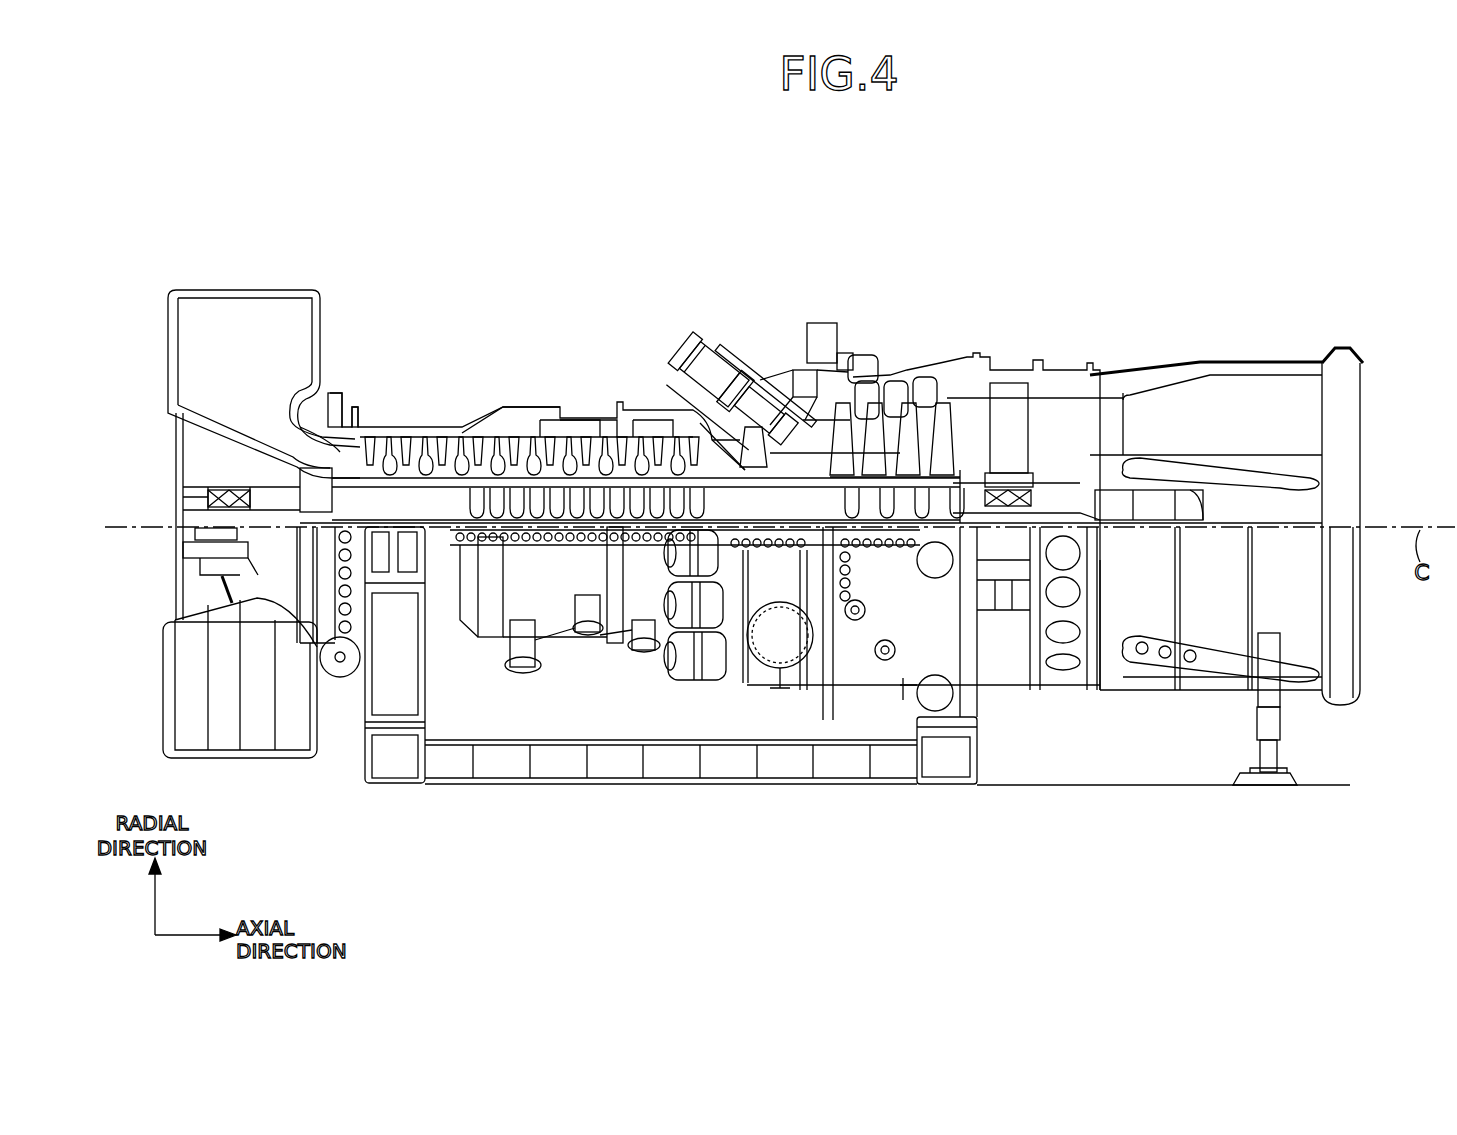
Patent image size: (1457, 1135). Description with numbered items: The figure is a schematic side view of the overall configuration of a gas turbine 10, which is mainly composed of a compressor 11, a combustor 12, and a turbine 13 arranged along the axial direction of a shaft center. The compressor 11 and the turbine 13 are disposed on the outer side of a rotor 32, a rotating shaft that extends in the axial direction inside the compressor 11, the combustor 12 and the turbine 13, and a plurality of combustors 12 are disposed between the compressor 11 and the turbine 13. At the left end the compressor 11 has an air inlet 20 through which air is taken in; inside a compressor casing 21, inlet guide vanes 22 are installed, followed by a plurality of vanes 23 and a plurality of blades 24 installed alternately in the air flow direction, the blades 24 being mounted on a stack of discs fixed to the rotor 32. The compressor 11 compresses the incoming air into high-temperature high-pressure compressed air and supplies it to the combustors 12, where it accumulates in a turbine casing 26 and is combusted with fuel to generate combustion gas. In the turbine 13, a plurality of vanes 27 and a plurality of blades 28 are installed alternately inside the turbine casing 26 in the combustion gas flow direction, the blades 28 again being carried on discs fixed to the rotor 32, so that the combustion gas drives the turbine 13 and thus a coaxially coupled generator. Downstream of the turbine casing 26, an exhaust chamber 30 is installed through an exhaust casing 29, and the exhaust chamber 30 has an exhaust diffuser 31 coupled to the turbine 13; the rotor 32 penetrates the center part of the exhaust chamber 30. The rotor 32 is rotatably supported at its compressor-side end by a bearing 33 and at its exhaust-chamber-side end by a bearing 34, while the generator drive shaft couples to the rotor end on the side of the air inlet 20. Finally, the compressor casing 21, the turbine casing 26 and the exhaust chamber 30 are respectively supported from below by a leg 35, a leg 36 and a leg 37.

The gas turbine 10 is at (779, 213).
The compressor 11 is at (601, 374).
The combustor 12 is at (700, 320).
The turbine 13 is at (976, 375).
The air inlet 20 is at (182, 355).
The compressor casing 21 is at (392, 450).
The inlet guide vanes 22 is at (345, 440).
The vanes 23 is at (425, 455).
The blades 24 is at (352, 443).
The turbine casing 26 is at (907, 372).
The vanes 27 is at (855, 425).
The blades 28 is at (848, 430).
The exhaust casing 29 is at (1010, 360).
The exhaust diffuser 31 is at (1067, 360).
The exhaust chamber 30 is at (1278, 360).
The rotor 32 is at (735, 465).
The bearing 33 is at (183, 503).
The bearing 34 is at (1095, 468).
The leg 35 is at (365, 707).
The leg 36 is at (960, 697).
The leg 37 is at (1283, 727).